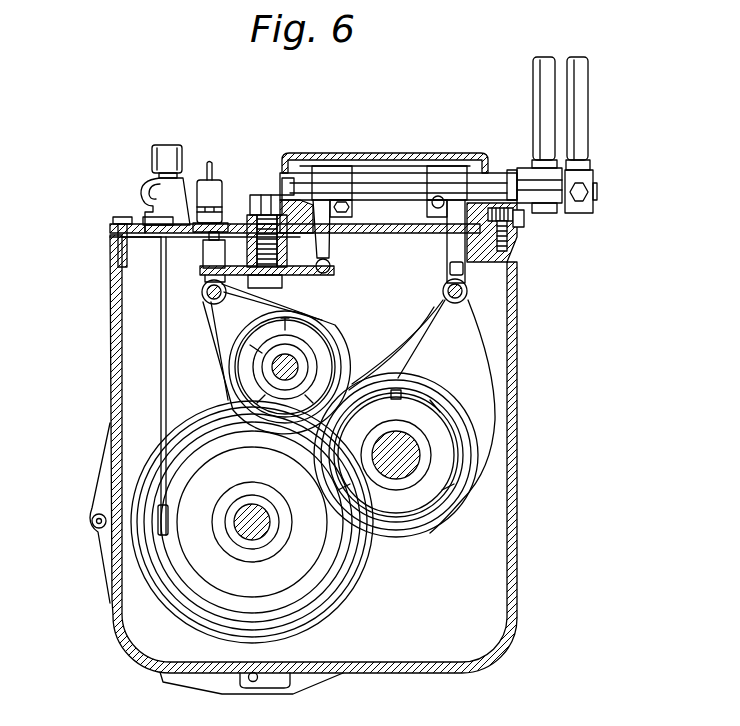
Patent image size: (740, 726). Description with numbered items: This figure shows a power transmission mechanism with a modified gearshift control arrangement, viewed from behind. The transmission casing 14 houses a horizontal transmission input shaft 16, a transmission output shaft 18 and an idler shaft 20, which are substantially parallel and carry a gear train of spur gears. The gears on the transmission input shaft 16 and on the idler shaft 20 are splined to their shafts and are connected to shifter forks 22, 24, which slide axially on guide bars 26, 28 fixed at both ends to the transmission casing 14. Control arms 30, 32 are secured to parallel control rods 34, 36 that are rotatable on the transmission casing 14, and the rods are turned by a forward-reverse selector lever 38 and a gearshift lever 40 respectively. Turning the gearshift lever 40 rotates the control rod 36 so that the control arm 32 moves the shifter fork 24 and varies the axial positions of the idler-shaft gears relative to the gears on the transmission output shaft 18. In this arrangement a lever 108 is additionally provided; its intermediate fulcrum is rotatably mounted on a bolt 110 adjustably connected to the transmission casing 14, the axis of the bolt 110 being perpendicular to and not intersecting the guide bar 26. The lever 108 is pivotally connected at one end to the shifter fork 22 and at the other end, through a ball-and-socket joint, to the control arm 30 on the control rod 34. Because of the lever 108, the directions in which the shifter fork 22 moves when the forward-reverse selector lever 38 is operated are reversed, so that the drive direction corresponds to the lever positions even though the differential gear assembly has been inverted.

The transmission casing 14 is at (104, 331).
The transmission input shaft 16 is at (272, 369).
The transmission output shaft 18 is at (258, 537).
The idler shaft 20 is at (398, 476).
The shifter fork 22 is at (332, 333).
The shifter fork 24 is at (430, 318).
The guide bar 26 is at (207, 296).
The guide bar 28 is at (454, 304).
The control arm 30 is at (331, 249).
The control arm 32 is at (447, 247).
The control rod 34 is at (328, 170).
The control rod 36 is at (450, 170).
The forward-reverse selector lever 38 is at (535, 108).
The gearshift lever 40 is at (586, 100).
The lever 108 is at (304, 288).
The bolt 110 is at (249, 226).